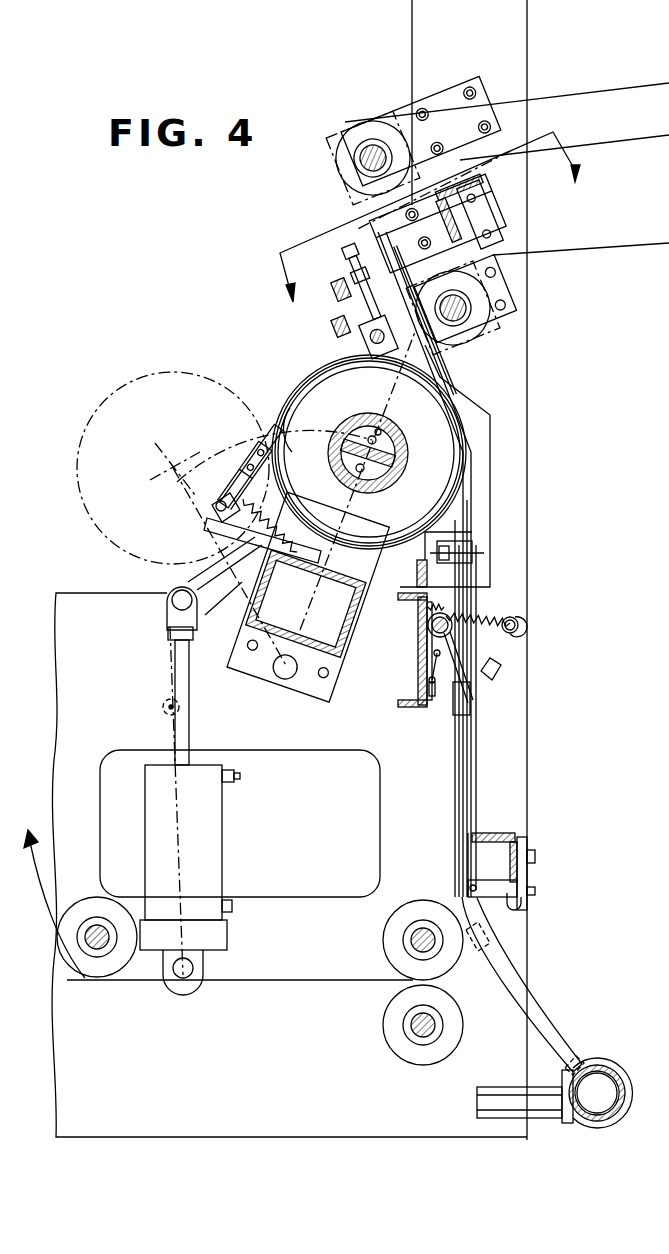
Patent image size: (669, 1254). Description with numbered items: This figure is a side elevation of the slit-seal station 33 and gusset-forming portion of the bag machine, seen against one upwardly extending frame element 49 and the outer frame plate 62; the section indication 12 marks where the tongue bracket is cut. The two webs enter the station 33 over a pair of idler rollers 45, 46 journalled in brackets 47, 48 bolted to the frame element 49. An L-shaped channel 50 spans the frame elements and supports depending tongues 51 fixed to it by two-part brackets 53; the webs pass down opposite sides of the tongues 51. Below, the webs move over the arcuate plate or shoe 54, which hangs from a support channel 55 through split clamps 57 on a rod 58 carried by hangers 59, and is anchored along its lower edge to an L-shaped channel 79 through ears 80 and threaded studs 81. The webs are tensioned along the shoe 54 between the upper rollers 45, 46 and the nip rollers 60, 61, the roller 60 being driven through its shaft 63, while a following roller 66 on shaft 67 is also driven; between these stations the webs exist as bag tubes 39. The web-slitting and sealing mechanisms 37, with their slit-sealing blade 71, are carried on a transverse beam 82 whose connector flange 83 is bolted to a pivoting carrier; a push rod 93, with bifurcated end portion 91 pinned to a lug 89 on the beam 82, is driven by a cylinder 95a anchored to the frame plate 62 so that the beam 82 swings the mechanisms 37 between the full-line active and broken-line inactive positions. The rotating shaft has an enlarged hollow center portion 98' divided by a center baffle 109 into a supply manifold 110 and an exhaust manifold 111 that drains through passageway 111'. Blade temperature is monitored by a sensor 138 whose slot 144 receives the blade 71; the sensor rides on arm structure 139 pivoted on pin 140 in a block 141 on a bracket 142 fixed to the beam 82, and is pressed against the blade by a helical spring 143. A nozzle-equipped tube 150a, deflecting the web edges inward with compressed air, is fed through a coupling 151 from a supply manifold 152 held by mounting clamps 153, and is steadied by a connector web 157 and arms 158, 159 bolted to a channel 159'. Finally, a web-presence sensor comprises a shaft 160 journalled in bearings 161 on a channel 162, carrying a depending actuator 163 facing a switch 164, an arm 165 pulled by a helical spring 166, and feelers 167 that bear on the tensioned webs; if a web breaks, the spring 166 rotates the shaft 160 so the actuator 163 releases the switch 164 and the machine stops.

The section line 12- 12 is at (440, 229).
The slit-seal station 33 is at (500, 394).
The web-slitting and sealing mechanisms 37 is at (290, 380).
The bag tubes 39 is at (282, 985).
The roller 45 is at (350, 136).
The roller 46 is at (470, 333).
The bracket 47 is at (447, 106).
The bracket 48 is at (512, 290).
The frame element 49 is at (530, 27).
The L-shaped channel 50 is at (490, 178).
The tongue 51 is at (375, 240).
The bracket 53 is at (383, 247).
The plate or shoe 54 is at (460, 542).
The support channel 55 is at (340, 327).
The split clamp 57 is at (400, 354).
The rod 58 is at (370, 350).
The hanger 59 is at (356, 302).
The pinch or nip roller 60 is at (387, 932).
The pinch or nip roller 61 is at (390, 1035).
The frame plate 62 is at (196, 1140).
The shaft 63 is at (413, 942).
The roller 66 is at (108, 980).
The shaft 67 is at (95, 945).
The slit-sealing blade 71 is at (285, 420).
The L-shaped channel 79 is at (440, 579).
The ear 80 is at (434, 538).
The threaded stud 81 is at (466, 553).
The beam 82 is at (356, 612).
The connector flange 83 is at (324, 705).
The lug 89 is at (215, 618).
The bifurcated end portion 91 is at (166, 619).
The push rod 93 is at (173, 658).
The cylinder 95a is at (222, 836).
The enlarged center portion 98' is at (382, 453).
The center baffle 109 is at (398, 463).
The supply passage or manifold 110 is at (356, 469).
The exhaust or return passage or manifold 111 is at (344, 423).
The passageway 111' is at (350, 409).
The sensor 138 is at (264, 449).
The arm structure 139 is at (244, 492).
The pivot pin 140 is at (215, 507).
The block 141 is at (212, 532).
The plate or bracket 142 is at (225, 571).
The helical spring 143 is at (275, 520).
The slot 144 is at (270, 433).
The nozzle-equipped tube 150a is at (500, 672).
The coupling 151 is at (558, 1042).
The supply manifold 152 is at (610, 1071).
The mounting clamp 153 is at (568, 1124).
The connector web 157 is at (502, 870).
The arm 158 is at (522, 910).
The arm 159 is at (553, 873).
The channel 159' is at (531, 836).
The rod or shaft 160 is at (432, 620).
The bearing 161 is at (432, 630).
The channel 162 is at (428, 680).
The actuator 163 is at (434, 656).
The switch 164 is at (430, 708).
The arm or lever 165 is at (514, 621).
The helical spring 166 is at (510, 636).
The feeler 167 is at (452, 722).